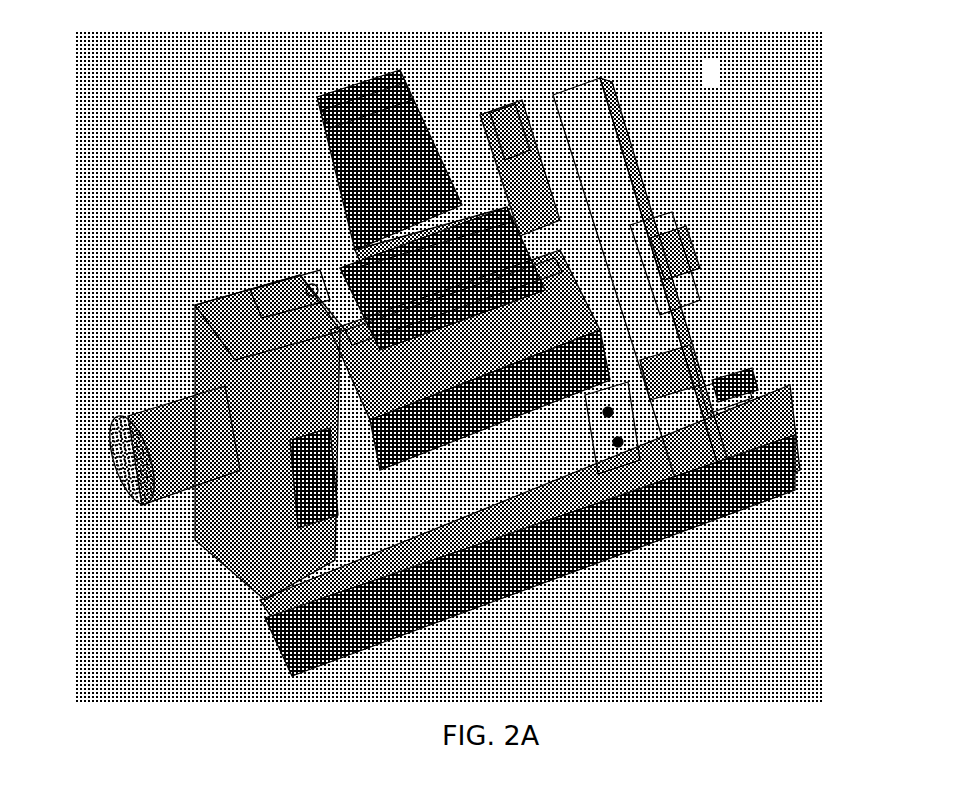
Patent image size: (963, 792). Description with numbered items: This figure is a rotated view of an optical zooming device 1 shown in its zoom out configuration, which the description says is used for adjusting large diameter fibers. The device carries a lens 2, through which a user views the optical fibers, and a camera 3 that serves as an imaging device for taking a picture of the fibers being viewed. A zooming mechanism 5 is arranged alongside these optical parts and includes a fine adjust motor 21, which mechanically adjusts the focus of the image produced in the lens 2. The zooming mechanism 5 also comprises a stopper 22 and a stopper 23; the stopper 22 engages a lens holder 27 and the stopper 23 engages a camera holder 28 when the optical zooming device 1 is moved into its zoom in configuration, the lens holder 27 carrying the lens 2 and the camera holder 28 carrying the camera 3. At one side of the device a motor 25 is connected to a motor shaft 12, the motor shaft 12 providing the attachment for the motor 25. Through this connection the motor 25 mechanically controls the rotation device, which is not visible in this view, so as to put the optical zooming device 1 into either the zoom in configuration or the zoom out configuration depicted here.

The optical zooming device 1 is at (168, 176).
The lens 2 is at (306, 106).
The camera 3 is at (406, 402).
The zooming mechanism 5 is at (648, 138).
The motor shaft 12 is at (310, 520).
The fine adjust motor 21 is at (712, 284).
The stopper 22 is at (484, 110).
The stopper 23 is at (612, 464).
The motor 25 is at (108, 426).
The lens holder 27 is at (313, 268).
The camera holder 28 is at (632, 358).